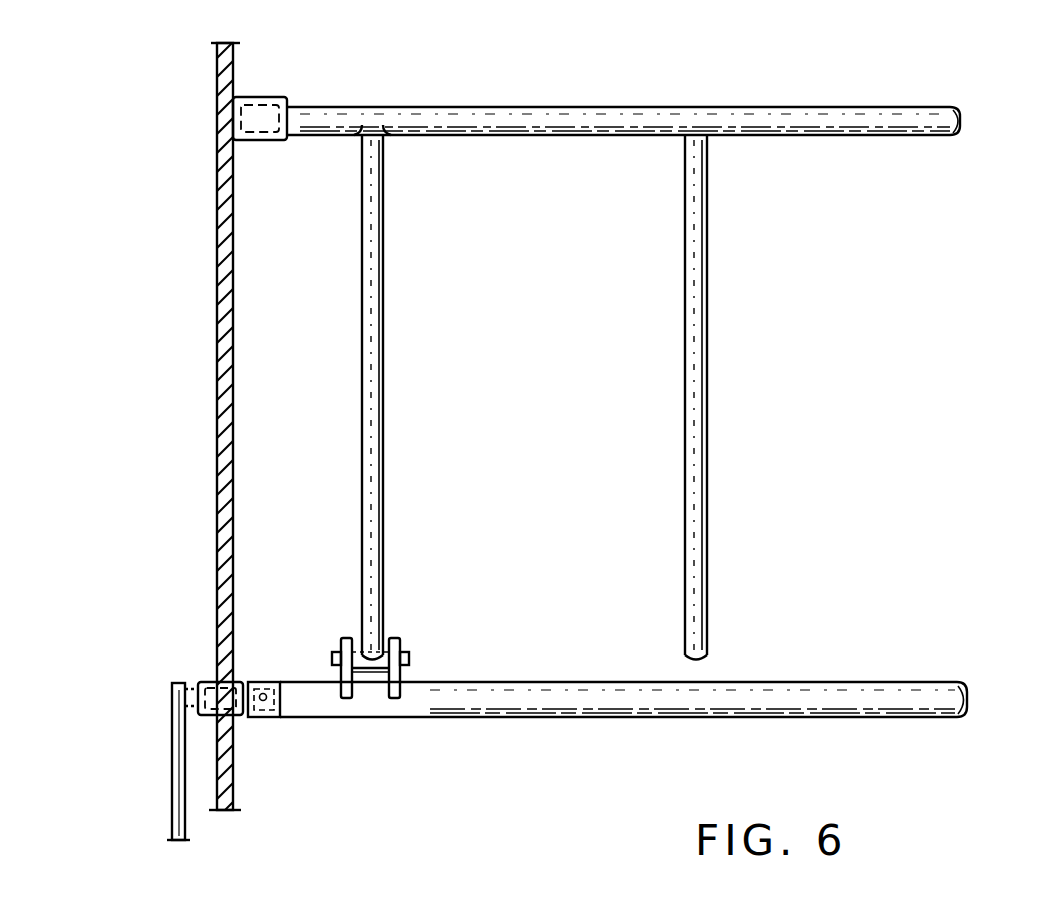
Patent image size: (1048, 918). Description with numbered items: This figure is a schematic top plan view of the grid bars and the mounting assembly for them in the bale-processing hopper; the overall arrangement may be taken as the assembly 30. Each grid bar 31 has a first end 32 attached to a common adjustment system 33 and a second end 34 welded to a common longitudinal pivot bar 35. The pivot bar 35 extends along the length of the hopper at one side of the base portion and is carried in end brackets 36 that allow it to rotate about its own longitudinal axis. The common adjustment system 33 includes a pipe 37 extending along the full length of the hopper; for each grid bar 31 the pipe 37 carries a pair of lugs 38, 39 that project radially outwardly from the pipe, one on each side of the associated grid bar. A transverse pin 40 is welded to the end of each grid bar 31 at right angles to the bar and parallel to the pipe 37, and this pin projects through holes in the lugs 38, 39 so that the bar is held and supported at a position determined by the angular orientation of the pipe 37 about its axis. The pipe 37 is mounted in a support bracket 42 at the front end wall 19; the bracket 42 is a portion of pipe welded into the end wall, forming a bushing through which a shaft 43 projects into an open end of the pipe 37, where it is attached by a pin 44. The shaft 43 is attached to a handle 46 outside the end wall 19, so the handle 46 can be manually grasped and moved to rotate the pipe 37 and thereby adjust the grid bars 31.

The front end wall 19 is at (216, 360).
The frame assembly 30 is at (892, 282).
The grid bar 31 is at (386, 390).
The first end 32 is at (363, 655).
The common adjustment system 33 is at (486, 657).
The second end 34 is at (386, 137).
The pivot bar 35 is at (535, 107).
The end bracket 36 is at (258, 95).
The pipe 37 is at (790, 683).
The lug 38 is at (342, 650).
The lug 39 is at (398, 650).
The transverse pin 40 is at (372, 668).
The support bracket 42 is at (205, 682).
The shaft 43 is at (195, 683).
The pin 44 is at (265, 700).
The handle 46 is at (172, 776).